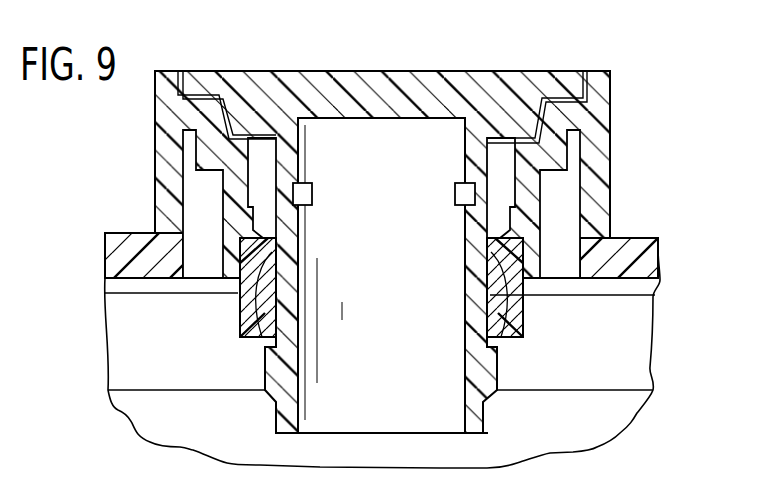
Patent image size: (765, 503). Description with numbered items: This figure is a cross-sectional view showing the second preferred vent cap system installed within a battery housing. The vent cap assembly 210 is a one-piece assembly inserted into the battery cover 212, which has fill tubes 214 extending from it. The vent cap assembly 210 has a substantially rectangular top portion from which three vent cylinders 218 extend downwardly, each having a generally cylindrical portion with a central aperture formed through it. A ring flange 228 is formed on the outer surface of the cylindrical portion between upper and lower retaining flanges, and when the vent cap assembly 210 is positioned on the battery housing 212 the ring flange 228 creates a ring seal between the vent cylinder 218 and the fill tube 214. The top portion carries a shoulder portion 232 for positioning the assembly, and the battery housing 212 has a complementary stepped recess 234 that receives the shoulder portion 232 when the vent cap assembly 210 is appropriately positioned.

The vent cap assembly 210 is at (386, 48).
The battery cover 212 is at (630, 247).
The fill tube 214 is at (520, 306).
The vent cylinder 218 is at (507, 420).
The ring flange 228 is at (270, 295).
The shoulder portion 232 is at (250, 120).
The stepped recess 234 is at (555, 113).